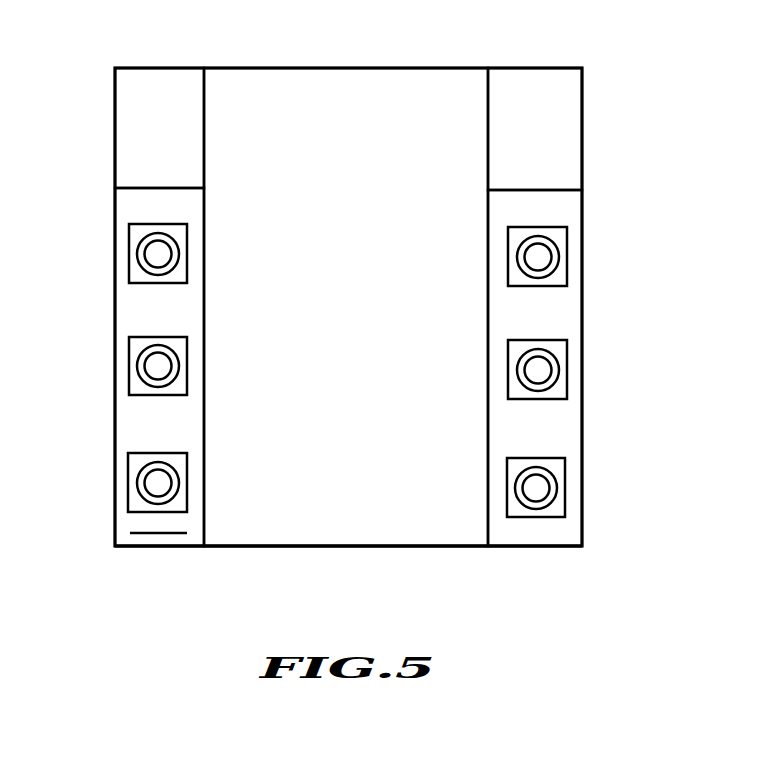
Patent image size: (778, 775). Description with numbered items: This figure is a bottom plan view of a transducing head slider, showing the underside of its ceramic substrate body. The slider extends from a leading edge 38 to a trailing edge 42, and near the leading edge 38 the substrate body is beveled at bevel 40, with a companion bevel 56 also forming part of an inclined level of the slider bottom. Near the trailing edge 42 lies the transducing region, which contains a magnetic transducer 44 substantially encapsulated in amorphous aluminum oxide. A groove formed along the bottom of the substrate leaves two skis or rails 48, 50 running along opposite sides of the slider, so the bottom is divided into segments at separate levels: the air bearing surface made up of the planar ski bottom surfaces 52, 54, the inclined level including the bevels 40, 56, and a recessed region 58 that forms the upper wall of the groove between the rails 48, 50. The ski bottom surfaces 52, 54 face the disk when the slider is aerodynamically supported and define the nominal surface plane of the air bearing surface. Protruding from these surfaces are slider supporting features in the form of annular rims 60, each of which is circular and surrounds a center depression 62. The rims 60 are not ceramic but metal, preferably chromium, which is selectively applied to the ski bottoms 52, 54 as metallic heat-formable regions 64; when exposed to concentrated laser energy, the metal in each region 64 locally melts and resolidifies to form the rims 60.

The leading edge 38 is at (390, 68).
The bevel 40 is at (137, 133).
The trailing edge 42 is at (372, 547).
The magnetic transducer 44 is at (153, 534).
The rail 48 is at (130, 307).
The rail 50 is at (560, 431).
The ski bottom surface 52 is at (178, 433).
The ski bottom surface 54 is at (510, 309).
The bevel 56 is at (557, 135).
The recessed region 58 is at (378, 190).
The annular rim 60 is at (140, 247).
The center depression 62 is at (165, 256).
The metallic heat-formable region 64 is at (180, 378).